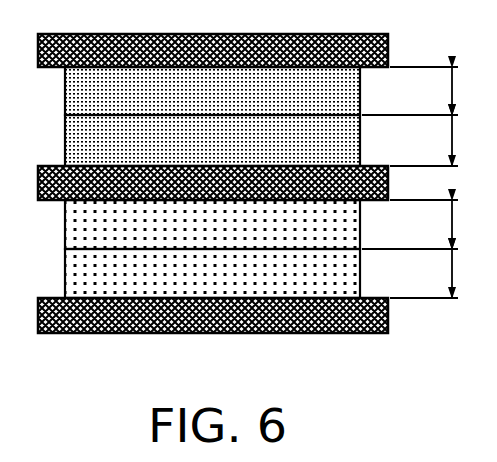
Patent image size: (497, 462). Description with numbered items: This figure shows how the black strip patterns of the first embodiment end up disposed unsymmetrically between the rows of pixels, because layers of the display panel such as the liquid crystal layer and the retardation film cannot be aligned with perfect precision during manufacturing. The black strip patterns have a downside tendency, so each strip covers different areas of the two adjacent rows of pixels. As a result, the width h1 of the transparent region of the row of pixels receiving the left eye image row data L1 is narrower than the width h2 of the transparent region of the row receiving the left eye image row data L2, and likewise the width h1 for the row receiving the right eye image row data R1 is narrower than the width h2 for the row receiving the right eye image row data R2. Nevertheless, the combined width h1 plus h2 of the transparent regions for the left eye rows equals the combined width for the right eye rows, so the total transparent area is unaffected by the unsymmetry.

The left eye image row data L1 is at (212, 91).
The left eye image row data L2 is at (212, 140).
The right eye image row data R1 is at (212, 224).
The right eye image row data R2 is at (212, 273).
The width of the transparent region h1 is at (427, 158).
The width of the transparent region h2 is at (441, 206).